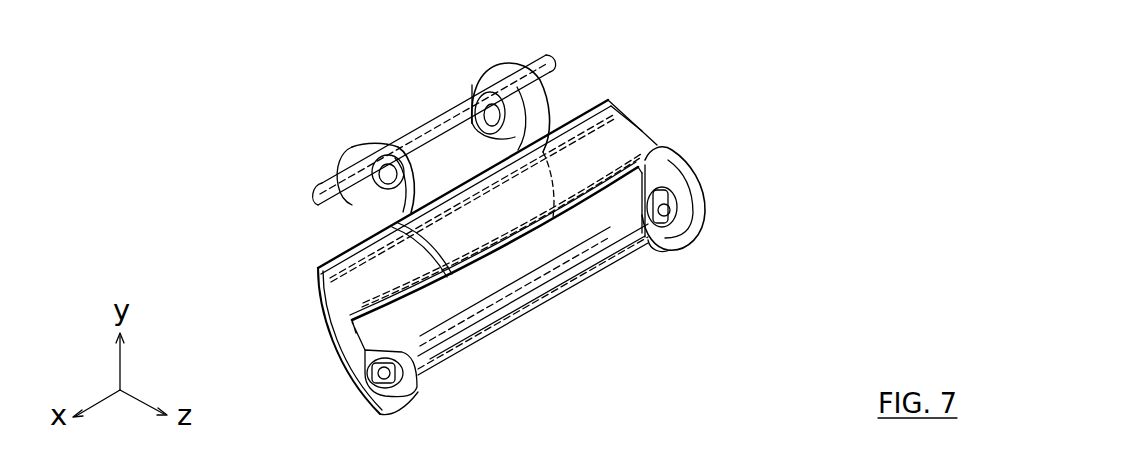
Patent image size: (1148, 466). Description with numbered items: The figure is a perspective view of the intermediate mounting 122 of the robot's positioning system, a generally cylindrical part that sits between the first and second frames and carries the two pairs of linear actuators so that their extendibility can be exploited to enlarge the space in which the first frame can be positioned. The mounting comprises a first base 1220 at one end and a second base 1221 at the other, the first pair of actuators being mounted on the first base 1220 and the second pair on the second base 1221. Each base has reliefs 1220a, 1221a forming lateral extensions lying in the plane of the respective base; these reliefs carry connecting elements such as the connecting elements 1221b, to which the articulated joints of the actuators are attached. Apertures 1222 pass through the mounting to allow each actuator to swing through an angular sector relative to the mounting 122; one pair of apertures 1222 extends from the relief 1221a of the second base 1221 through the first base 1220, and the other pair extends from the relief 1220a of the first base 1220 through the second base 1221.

The intermediate mounting 122 is at (404, 79).
The first base 1220 is at (318, 317).
The reliefs 1220a is at (320, 183).
The second base 1221 is at (576, 133).
The reliefs 1221a is at (502, 75).
The connecting elements 1221b is at (653, 243).
The apertures 1222 is at (345, 227).